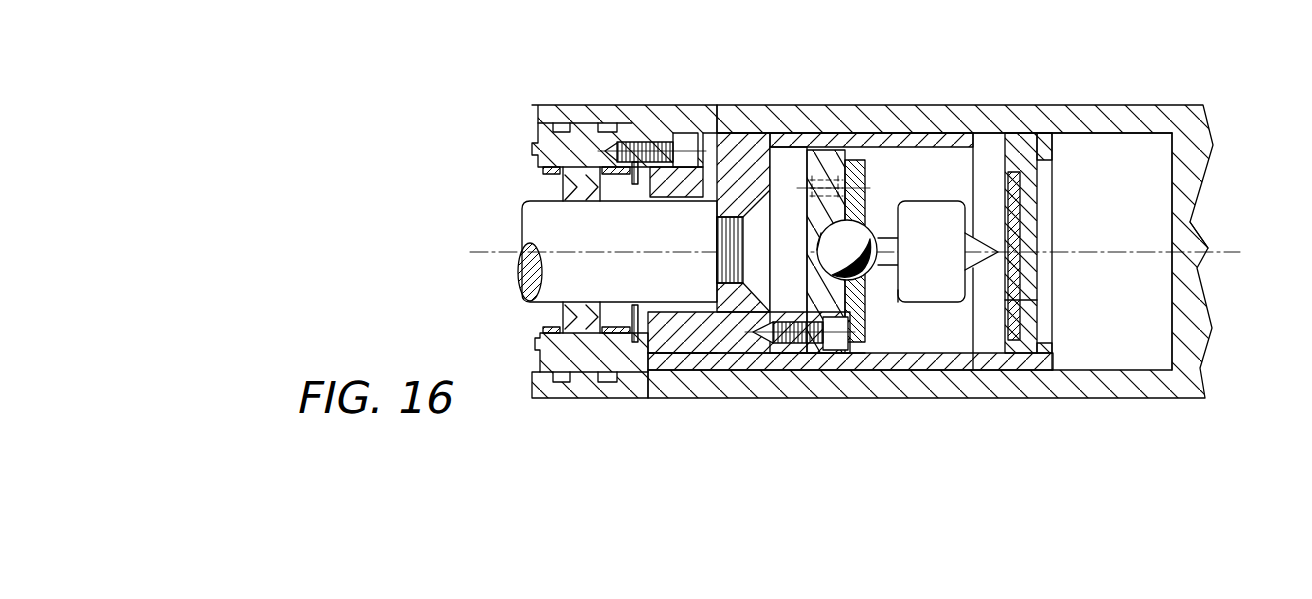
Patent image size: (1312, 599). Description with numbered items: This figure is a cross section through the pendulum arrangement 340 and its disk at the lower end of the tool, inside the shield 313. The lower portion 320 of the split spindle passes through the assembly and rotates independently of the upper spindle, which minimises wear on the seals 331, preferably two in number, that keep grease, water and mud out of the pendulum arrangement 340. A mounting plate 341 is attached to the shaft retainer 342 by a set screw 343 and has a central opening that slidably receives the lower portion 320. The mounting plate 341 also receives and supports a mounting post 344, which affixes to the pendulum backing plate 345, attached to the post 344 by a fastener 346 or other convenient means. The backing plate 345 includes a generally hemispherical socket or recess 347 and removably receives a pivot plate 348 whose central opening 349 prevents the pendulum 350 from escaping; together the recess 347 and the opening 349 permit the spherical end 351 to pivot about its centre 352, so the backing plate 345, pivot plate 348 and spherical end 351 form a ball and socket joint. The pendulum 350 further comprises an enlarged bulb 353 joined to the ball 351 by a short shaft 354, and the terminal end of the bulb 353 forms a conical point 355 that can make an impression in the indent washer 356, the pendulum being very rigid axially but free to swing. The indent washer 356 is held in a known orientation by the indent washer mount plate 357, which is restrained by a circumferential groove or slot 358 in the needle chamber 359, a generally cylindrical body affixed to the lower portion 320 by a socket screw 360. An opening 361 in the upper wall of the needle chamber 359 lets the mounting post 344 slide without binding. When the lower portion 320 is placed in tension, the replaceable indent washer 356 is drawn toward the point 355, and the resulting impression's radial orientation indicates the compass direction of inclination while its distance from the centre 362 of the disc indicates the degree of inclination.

The shield 313 is at (1086, 105).
The lower portion of the spindle 320 is at (525, 268).
The seals 331 is at (545, 190).
The pendulum arrangement 340 is at (985, 309).
The mounting plate 341 is at (740, 153).
The shaft retainer 342 is at (597, 360).
The set screw 343 is at (643, 133).
The mounting post 344 is at (733, 360).
The pendulum backing plate 345 is at (827, 150).
The fastener 346 is at (765, 345).
The hemispherical socket or recess 347 is at (784, 163).
The pivot plate 348 is at (862, 160).
The central opening 349 is at (868, 224).
The pendulum 350 is at (930, 201).
The spherical end 351 is at (850, 355).
The centre 352 is at (815, 247).
The enlarged bulb 353 is at (935, 296).
The short shaft 354 is at (890, 270).
The conical point 355 is at (962, 257).
The indent washer 356 is at (1037, 192).
The indent washer mount plate 357 is at (1027, 300).
The circumferential groove or slot 358 is at (975, 254).
The needle chamber 359 is at (757, 133).
The socket screw 360 is at (752, 268).
The opening 361 is at (682, 360).
The centre of the disc 362 is at (1025, 250).